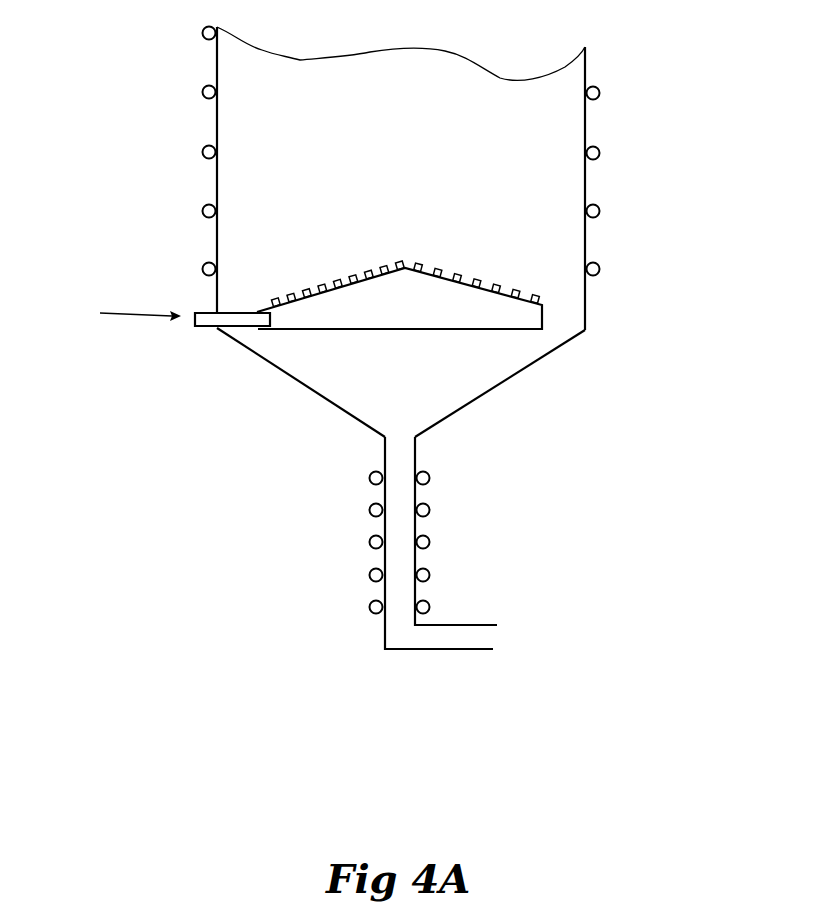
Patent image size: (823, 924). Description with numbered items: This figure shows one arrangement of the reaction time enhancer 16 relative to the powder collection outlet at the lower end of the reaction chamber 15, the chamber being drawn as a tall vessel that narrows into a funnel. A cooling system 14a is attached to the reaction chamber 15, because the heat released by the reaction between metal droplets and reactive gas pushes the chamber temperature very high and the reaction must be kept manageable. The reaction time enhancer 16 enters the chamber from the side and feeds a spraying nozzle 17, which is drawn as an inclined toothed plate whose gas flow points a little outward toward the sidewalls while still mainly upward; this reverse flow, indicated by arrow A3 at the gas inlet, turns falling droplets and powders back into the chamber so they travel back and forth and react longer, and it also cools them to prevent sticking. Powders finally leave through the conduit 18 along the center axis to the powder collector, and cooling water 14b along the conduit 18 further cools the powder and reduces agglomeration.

The cooling system 14a is at (204, 38).
The cooling water 14b is at (429, 511).
The vessel / hopper body 15 is at (492, 166).
The reaction time enhancer 16 is at (307, 315).
The spraying nozzle 17 is at (405, 270).
The conduit 18 is at (397, 528).
The flow direction arrow A3 is at (126, 314).